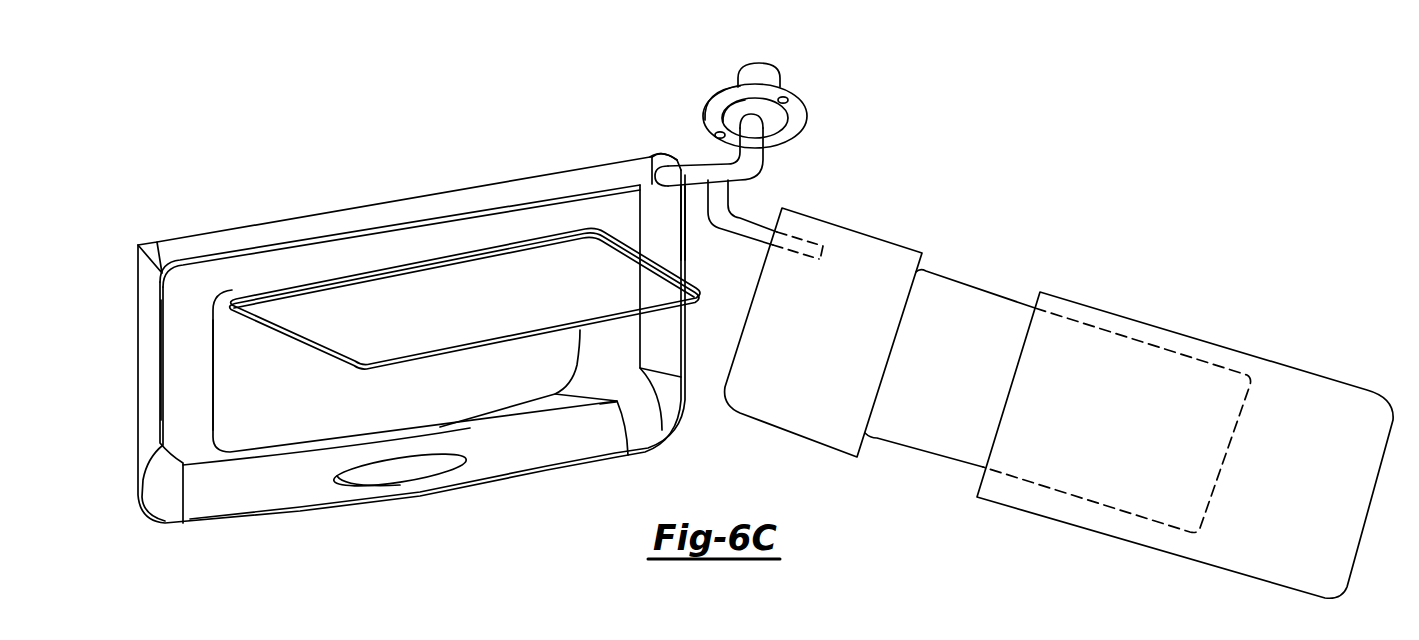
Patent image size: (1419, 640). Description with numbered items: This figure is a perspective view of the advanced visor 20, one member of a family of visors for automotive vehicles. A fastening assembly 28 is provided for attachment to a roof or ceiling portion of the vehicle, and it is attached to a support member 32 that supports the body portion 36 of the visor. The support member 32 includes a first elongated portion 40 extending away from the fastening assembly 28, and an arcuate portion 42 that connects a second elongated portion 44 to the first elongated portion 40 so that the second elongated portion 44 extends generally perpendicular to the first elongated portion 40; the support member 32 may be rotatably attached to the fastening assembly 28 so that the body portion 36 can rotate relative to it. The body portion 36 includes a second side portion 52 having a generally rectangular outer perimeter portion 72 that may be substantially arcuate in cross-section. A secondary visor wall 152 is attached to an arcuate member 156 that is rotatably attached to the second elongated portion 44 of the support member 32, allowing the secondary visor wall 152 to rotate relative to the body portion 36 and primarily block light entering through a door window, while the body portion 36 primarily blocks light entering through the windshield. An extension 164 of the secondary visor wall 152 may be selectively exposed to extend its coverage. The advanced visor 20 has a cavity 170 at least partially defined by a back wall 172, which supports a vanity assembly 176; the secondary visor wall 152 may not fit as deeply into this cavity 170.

The advanced visor 20 is at (532, 140).
The fastening assembly 28 is at (834, 101).
The support member 32 is at (690, 192).
The body portion 36 is at (508, 509).
The first elongated portion 40 is at (748, 80).
The arcuate portion 42 is at (750, 160).
The second elongated portion 44 is at (697, 157).
The second side portion 52 is at (201, 312).
The outer perimeter portion 72 is at (248, 500).
The secondary visor wall 152 is at (1147, 333).
The arcuate member 156 is at (718, 230).
The extension 164 is at (977, 313).
The cavity 170 is at (612, 380).
The back wall 172 is at (183, 418).
The vanity assembly 176 is at (422, 285).